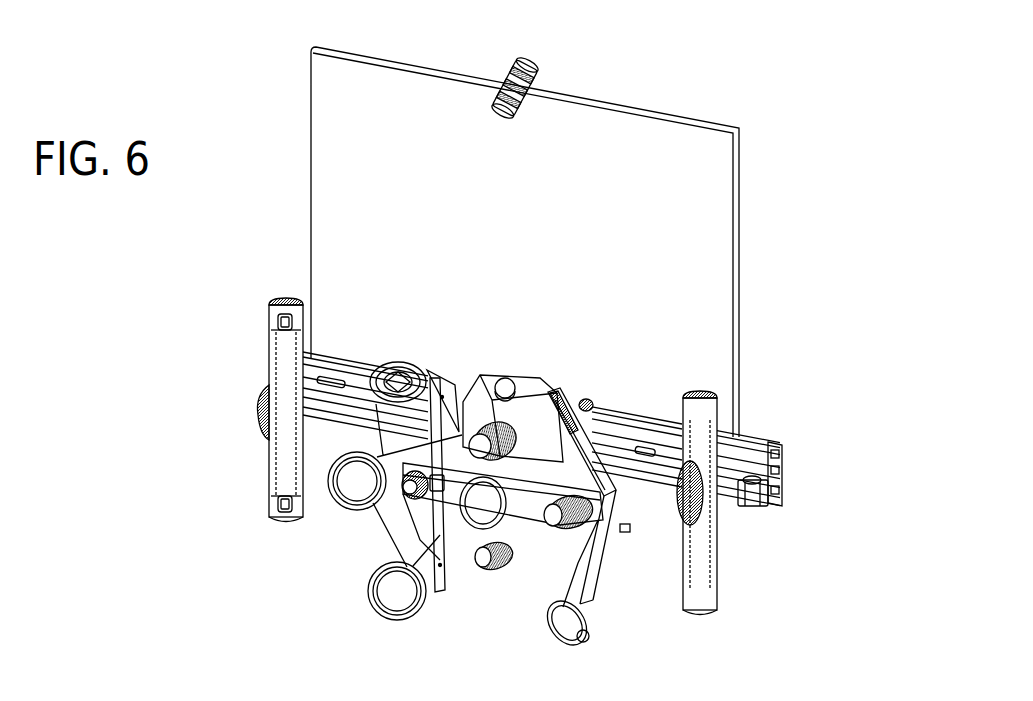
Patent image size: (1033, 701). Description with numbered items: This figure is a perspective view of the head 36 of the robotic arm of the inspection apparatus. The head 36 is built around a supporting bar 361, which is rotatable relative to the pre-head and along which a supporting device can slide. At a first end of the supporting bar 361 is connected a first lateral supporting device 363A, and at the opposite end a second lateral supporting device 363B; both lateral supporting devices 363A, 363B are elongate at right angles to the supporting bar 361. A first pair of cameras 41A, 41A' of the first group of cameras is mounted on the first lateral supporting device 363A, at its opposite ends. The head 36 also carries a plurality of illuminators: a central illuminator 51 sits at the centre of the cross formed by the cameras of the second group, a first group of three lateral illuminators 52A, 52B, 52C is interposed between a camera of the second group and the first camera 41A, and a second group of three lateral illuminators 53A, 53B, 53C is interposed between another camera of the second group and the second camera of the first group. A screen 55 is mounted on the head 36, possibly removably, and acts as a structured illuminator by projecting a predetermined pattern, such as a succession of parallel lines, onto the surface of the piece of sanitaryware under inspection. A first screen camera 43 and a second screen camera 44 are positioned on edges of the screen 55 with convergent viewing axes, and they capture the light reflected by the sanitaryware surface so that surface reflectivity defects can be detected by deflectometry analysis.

The head 36 is at (521, 592).
The first camera 41A is at (225, 491).
The first camera 41A' is at (229, 294).
The first screen camera 43 is at (503, 112).
The second screen camera 44 is at (506, 384).
The central illuminator 51 is at (483, 510).
The illuminator 52A is at (397, 378).
The illuminator 52B is at (348, 487).
The illuminator 52C is at (383, 584).
The illuminator 53A is at (573, 404).
The illuminator 53B is at (613, 536).
The illuminator 53C is at (563, 622).
The screen 55 is at (675, 192).
The supporting bar 361 is at (657, 458).
The first lateral supporting device 363A is at (284, 366).
The second lateral supporting device 363B is at (703, 560).